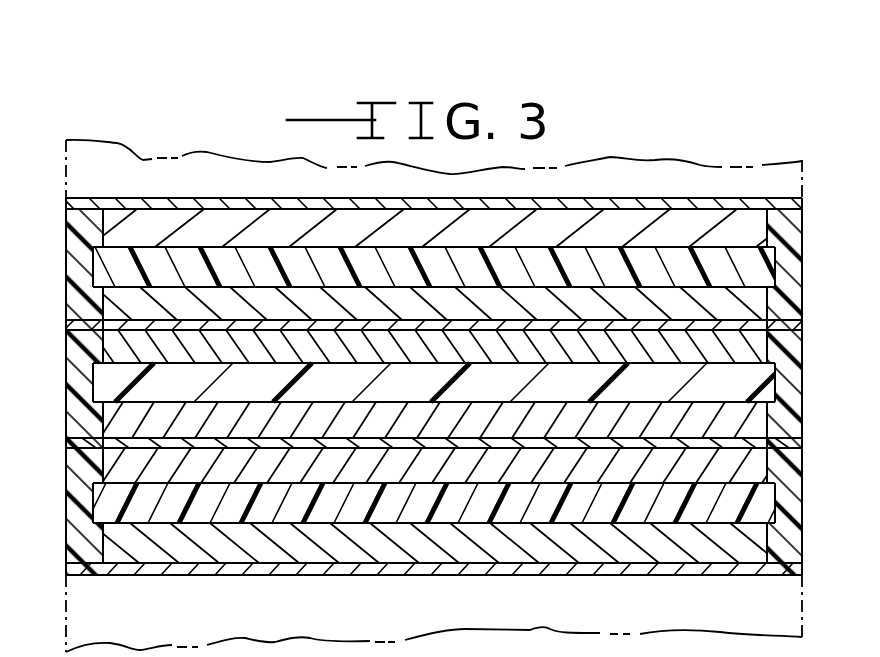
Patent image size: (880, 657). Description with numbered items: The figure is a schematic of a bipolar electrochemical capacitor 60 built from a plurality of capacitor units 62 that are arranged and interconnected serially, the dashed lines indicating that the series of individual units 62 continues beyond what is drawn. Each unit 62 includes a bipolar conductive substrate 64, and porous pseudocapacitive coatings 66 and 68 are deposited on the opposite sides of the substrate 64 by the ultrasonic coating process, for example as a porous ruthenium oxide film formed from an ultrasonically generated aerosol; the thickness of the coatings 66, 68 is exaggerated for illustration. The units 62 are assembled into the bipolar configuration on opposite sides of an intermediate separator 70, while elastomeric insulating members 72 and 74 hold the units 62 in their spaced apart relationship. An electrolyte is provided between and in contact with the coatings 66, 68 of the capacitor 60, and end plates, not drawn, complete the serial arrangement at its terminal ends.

The bipolar electrochemical capacitor 60 is at (773, 157).
The capacitor unit 62 is at (62, 360).
The bipolar conductive substrate 64 is at (630, 206).
The porous pseudocapacitive coating 66 is at (697, 228).
The porous pseudocapacitive coating 68 is at (578, 300).
The intermediate separator 70 is at (785, 226).
The elastomeric insulating member 72 is at (802, 222).
The elastomeric insulating member 74 is at (77, 245).